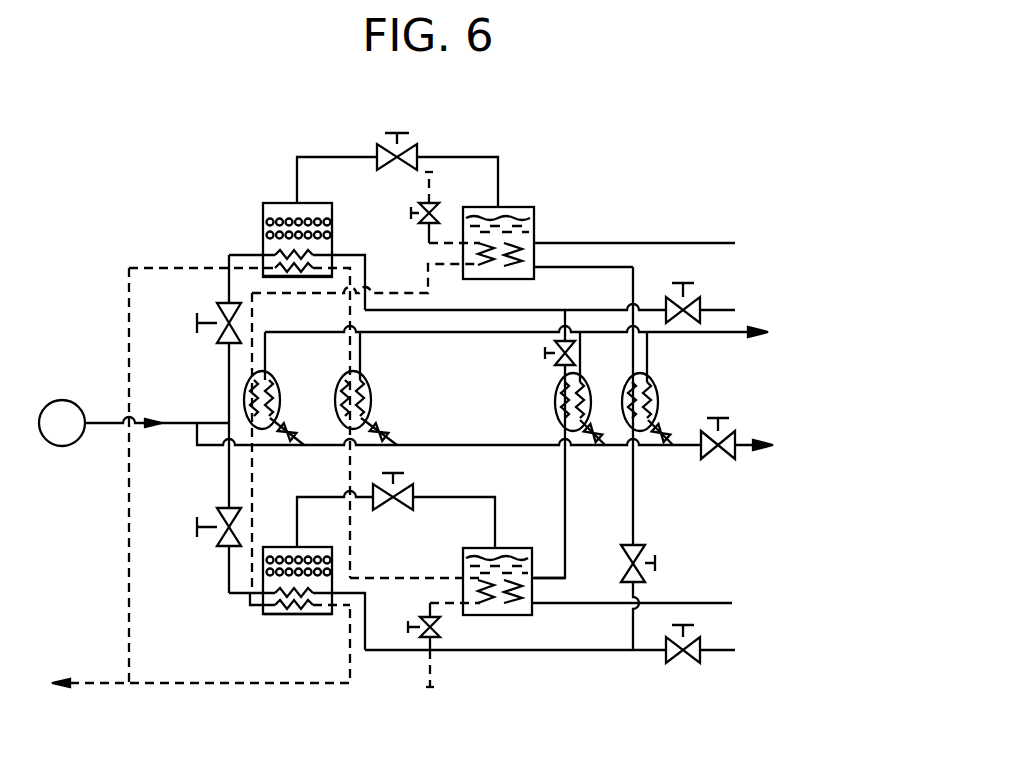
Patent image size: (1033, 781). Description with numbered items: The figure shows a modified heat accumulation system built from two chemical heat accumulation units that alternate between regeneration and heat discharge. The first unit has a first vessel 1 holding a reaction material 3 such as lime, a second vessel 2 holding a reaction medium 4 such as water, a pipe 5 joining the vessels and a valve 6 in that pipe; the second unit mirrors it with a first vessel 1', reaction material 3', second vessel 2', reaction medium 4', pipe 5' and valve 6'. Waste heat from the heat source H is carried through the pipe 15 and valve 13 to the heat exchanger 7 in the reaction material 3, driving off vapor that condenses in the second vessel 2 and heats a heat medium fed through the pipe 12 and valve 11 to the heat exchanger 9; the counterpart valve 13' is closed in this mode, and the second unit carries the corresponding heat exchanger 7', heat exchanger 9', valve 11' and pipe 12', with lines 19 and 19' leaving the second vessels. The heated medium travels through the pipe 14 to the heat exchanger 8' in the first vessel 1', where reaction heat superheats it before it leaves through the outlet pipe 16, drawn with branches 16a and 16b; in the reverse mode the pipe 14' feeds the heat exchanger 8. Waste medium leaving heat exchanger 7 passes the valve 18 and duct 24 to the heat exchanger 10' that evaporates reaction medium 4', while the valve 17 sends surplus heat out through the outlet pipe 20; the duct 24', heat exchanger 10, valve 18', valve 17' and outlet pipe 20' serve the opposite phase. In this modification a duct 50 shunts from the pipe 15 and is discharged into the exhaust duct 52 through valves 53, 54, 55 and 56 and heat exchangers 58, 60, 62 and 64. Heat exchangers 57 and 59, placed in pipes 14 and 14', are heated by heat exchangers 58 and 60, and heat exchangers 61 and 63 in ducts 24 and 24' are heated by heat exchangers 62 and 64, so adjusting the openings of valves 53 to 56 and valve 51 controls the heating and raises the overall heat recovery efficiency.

The first vessel 1 is at (289, 213).
The second vessel 2 is at (502, 214).
The reaction material 3 is at (273, 211).
The reaction medium 4 is at (524, 207).
The pipe 5 is at (337, 161).
The valve 6 is at (387, 135).
The heat exchanger 7 is at (264, 247).
The heat exchanger 8 is at (297, 300).
The heat exchanger 9 is at (479, 276).
The heat exchanger 10 is at (568, 276).
The valve 11 is at (404, 212).
The pipe 12 is at (448, 185).
The valve 13 is at (201, 339).
The pipe 14 is at (366, 267).
The duct or pipe 15 is at (139, 426).
The outlet pipe 16 is at (108, 685).
The return line branch 16a is at (128, 630).
The return line branch 16b is at (213, 683).
The valve 17 is at (701, 292).
The valve 18 is at (534, 352).
The cooling medium line 19 is at (582, 222).
The outlet pipe 20 is at (570, 293).
The duct 24 is at (571, 444).
The duct or pipe 50 is at (220, 445).
The valve 51 is at (717, 453).
The exhaust duct 52 is at (470, 332).
The valve 53 is at (290, 424).
The valve 54 is at (384, 424).
The valve 55 is at (598, 422).
The valve 56 is at (668, 432).
The heat exchanger 57 is at (246, 396).
The heat exchanger 58 is at (272, 381).
The heat exchanger 59 is at (346, 383).
The heat exchanger 60 is at (366, 397).
The heat exchanger 61 is at (560, 409).
The heat exchanger 62 is at (566, 397).
The heat exchanger 63 is at (633, 383).
The heat exchanger 64 is at (652, 397).
The heat source H is at (62, 400).
The first vessel 1' is at (297, 556).
The second vessel 2' is at (485, 560).
The reaction material 3' is at (295, 539).
The reaction medium 4' is at (499, 539).
The pipe 5' is at (375, 503).
The valve 6' is at (388, 505).
The adsorber heat exchanger coil 7' is at (247, 592).
The heat exchanger 8' is at (296, 638).
The vessel heat exchanger coil 9' is at (483, 615).
The heat exchanger 10' is at (534, 614).
The bypass valve 11' is at (406, 621).
The control line 12' is at (451, 679).
The valve 13' is at (194, 508).
The pipe 14' is at (415, 560).
The outlet valve 17' is at (677, 663).
The connecting valve 18' is at (670, 558).
The cooling medium line 19' is at (596, 583).
The cooling medium outlet line 20' is at (574, 667).
The duct 24' is at (660, 458).